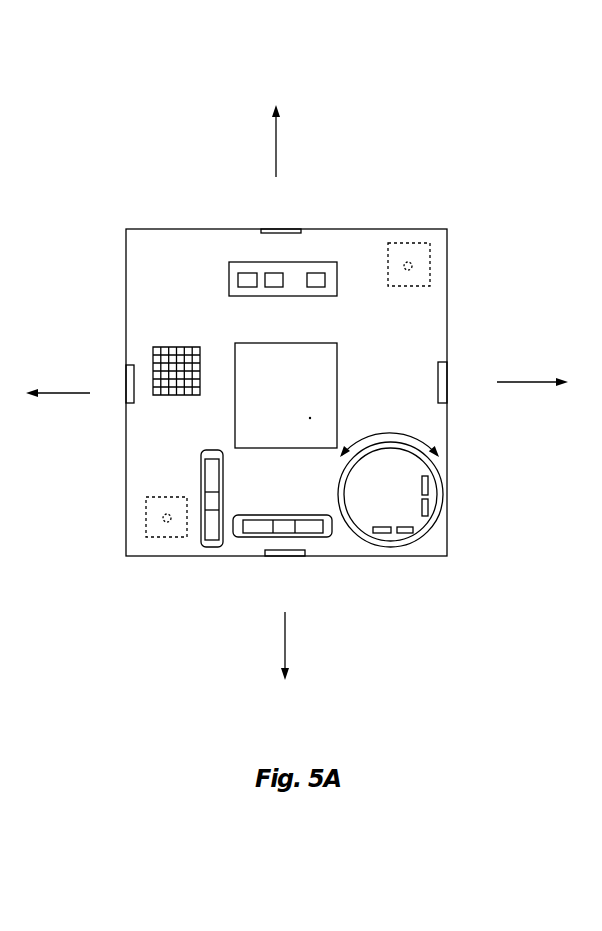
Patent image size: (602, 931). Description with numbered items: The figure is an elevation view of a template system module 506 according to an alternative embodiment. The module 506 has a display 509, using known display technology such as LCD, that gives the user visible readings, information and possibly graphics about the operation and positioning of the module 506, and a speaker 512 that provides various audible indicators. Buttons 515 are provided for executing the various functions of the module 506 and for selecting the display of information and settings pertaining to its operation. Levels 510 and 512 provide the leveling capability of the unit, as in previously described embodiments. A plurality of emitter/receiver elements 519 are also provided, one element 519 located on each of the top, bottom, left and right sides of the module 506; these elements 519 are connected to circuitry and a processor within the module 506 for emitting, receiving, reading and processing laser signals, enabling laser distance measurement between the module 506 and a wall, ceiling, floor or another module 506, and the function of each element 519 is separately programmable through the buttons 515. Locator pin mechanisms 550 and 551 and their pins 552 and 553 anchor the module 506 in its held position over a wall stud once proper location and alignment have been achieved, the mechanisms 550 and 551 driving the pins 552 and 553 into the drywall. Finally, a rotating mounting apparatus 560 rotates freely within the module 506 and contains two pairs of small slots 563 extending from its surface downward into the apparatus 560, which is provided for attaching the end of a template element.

The module 506 is at (347, 126).
The display 509 is at (247, 343).
The level 510 is at (254, 537).
The speaker 512 is at (175, 347).
The buttons 515 is at (245, 262).
The emitter/receiver elements 519 is at (285, 229).
The locator pin mechanism 550 is at (430, 265).
The locator pin mechanism 551 is at (167, 540).
The pin 552 is at (408, 262).
The pin 553 is at (163, 520).
The rotating mounting apparatus 560 is at (378, 547).
The small slots 563 is at (428, 507).